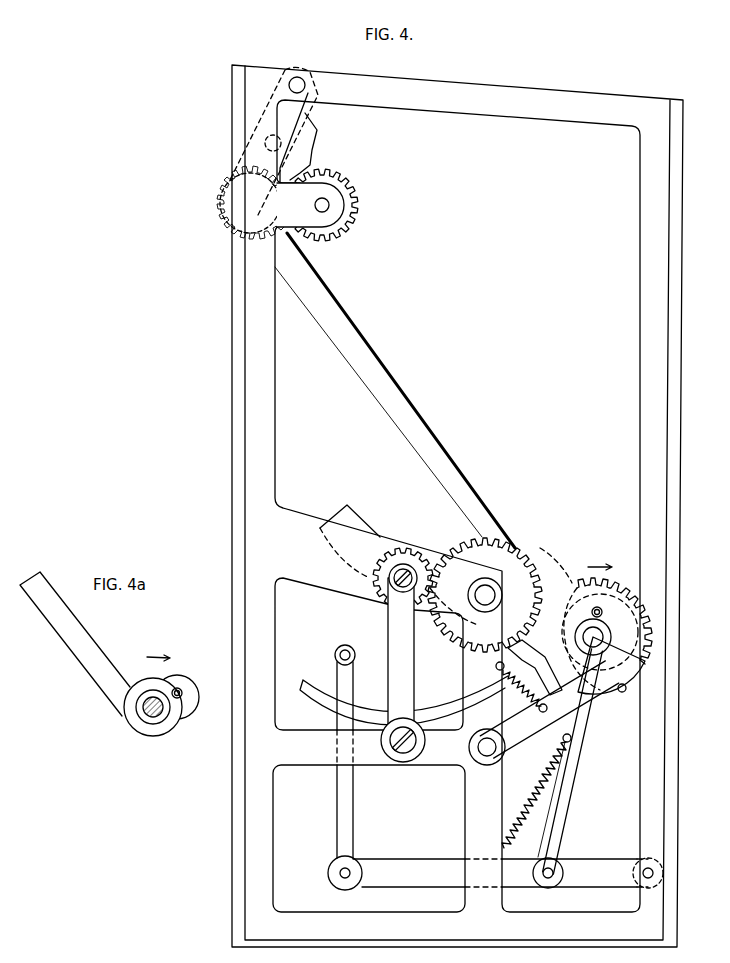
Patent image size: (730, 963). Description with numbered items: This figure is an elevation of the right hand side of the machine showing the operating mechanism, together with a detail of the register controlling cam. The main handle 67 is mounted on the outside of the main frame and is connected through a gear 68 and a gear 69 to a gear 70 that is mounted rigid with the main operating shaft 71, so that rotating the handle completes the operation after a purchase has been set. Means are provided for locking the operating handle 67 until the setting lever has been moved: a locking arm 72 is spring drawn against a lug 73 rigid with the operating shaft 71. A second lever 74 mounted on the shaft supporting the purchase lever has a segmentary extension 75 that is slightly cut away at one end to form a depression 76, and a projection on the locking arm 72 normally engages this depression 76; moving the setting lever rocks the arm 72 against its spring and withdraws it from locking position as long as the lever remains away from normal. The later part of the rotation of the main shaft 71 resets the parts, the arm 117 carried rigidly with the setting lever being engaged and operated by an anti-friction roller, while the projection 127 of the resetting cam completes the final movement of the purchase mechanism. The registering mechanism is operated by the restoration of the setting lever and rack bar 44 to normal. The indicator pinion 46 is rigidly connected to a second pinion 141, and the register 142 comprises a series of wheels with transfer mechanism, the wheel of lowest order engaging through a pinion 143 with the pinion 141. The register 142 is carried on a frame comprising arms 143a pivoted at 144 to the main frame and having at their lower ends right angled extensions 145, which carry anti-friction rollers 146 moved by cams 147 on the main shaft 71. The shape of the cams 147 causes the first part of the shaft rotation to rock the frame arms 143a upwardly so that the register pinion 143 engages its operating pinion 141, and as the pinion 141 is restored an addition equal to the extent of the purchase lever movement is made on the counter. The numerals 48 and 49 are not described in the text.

In FIG. 4, the rack bar 44 is at (603, 612).
In FIG. 4A, the rack bar 44 is at (150, 719).
In FIG. 4, the indicator pinion 46 is at (344, 650).
In FIG. 4, the lever arm 48 is at (640, 647).
In FIG. 4, the pin 49 is at (606, 614).
In FIG. 4, the main handle 67 is at (388, 630).
In FIG. 4, the gear 68 is at (421, 552).
In FIG. 4, the gear 69 is at (512, 548).
In FIG. 4, the gear 70 is at (578, 582).
In FIG. 4, the main operating shaft 71 is at (600, 555).
In FIG. 4, the locking arm 72 is at (563, 719).
In FIG. 4, the lug 73 is at (625, 691).
In FIG. 4, the second lever 74 is at (470, 640).
In FIG. 4, the segmentary extension 75 is at (436, 718).
In FIG. 4, the depression 76 is at (505, 664).
In FIG. 4, the arm 117 is at (396, 504).
In FIG. 4, the projection 127 is at (625, 595).
In FIG. 4, the second pinion 141 is at (356, 205).
In FIG. 4, the register 142 is at (222, 205).
In FIG. 4, the register pinion 143 is at (235, 232).
In FIG. 4A, the register pinion 143 is at (86, 663).
In FIG. 4, the frame arms 143a is at (358, 342).
In FIG. 4, the pivot 144 is at (306, 85).
In FIG. 4, the right angled extensions 145 is at (354, 822).
In FIG. 4A, the right angled extensions 145 is at (183, 708).
In FIG. 4A, the anti-friction rollers 146 is at (181, 689).
In FIG. 4A, the cams 147 is at (165, 733).